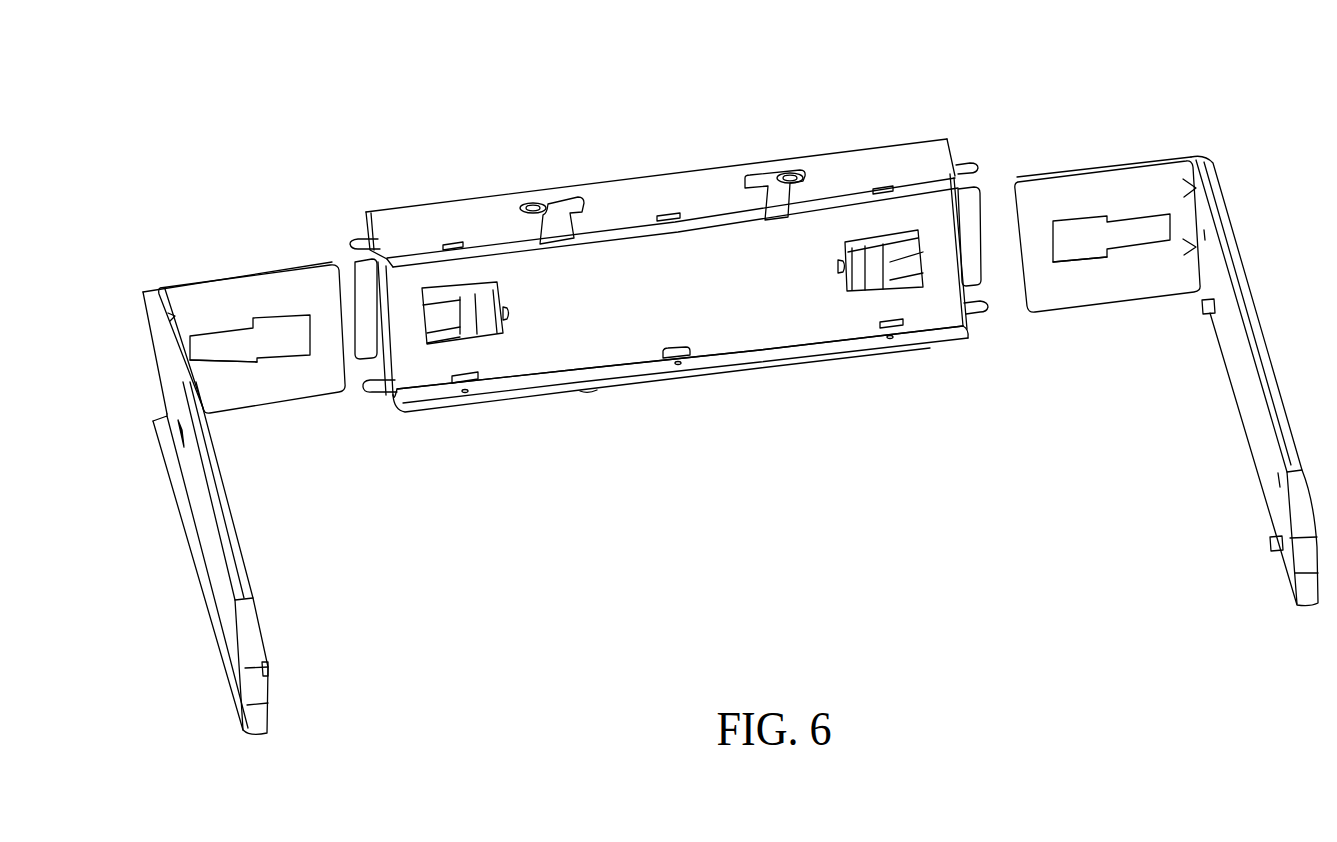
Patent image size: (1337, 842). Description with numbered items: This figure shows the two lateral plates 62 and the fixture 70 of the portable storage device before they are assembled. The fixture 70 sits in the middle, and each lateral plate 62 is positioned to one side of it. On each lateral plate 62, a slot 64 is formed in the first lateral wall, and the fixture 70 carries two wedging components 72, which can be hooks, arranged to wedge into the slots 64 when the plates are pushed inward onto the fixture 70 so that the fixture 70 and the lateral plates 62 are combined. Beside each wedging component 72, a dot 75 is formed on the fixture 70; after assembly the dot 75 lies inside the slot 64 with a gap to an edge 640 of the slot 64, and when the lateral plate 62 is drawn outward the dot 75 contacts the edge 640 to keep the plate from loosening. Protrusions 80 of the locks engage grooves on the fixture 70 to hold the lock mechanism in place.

The lateral plate 62 is at (248, 257).
The slot 64 is at (283, 334).
The edge of the slot 640 is at (298, 338).
The fixture 70 is at (683, 278).
The wedging component 72 is at (483, 328).
The dot 75 is at (503, 300).
The protrusion 80 is at (356, 239).